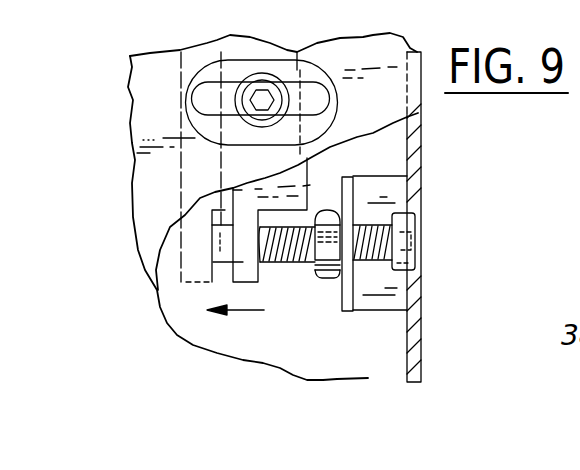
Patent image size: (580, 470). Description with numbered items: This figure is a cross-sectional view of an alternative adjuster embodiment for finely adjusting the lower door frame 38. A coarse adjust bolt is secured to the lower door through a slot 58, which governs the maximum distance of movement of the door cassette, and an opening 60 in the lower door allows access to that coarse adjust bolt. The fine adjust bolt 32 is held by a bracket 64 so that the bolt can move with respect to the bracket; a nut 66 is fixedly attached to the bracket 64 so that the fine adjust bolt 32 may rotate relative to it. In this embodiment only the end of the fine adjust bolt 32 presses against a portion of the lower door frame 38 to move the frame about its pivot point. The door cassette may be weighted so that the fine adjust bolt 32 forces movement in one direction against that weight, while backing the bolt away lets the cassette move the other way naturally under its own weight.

The lower door frame 38 is at (243, 47).
The opening 60 is at (318, 70).
The slot 58 is at (396, 45).
The fine adjust bolt 32 is at (417, 215).
The bracket 64 is at (348, 300).
The nut 66 is at (327, 280).